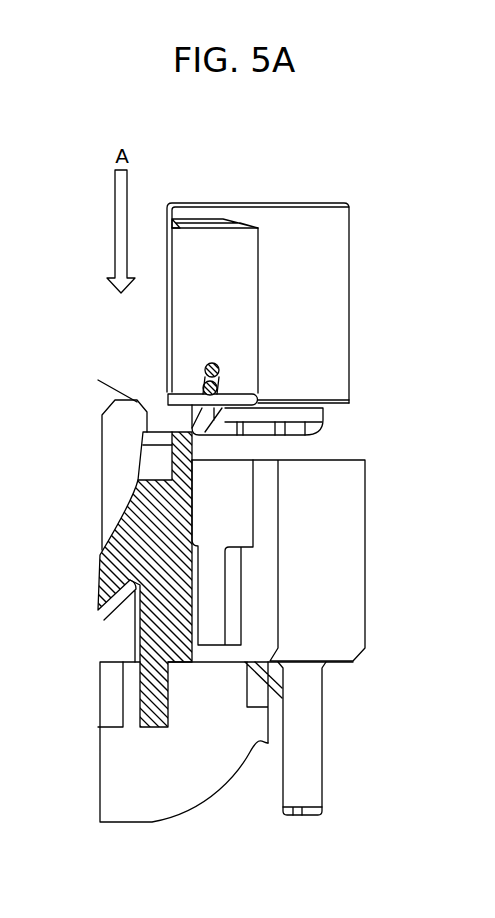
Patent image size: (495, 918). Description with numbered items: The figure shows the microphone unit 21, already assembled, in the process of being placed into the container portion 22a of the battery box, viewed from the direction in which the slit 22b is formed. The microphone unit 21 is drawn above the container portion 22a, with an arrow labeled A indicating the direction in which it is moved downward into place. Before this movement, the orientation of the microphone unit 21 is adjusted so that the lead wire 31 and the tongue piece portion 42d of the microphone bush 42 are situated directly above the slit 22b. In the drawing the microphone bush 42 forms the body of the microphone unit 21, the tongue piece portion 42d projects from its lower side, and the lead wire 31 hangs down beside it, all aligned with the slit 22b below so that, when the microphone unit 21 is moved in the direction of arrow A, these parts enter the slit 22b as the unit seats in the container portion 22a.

The microphone unit 21 is at (274, 187).
The microphone bush 42 is at (283, 270).
The tongue piece portion 42d is at (182, 400).
The lead wire 31 is at (219, 370).
The container portion 22a is at (317, 615).
The slit 22b is at (122, 601).